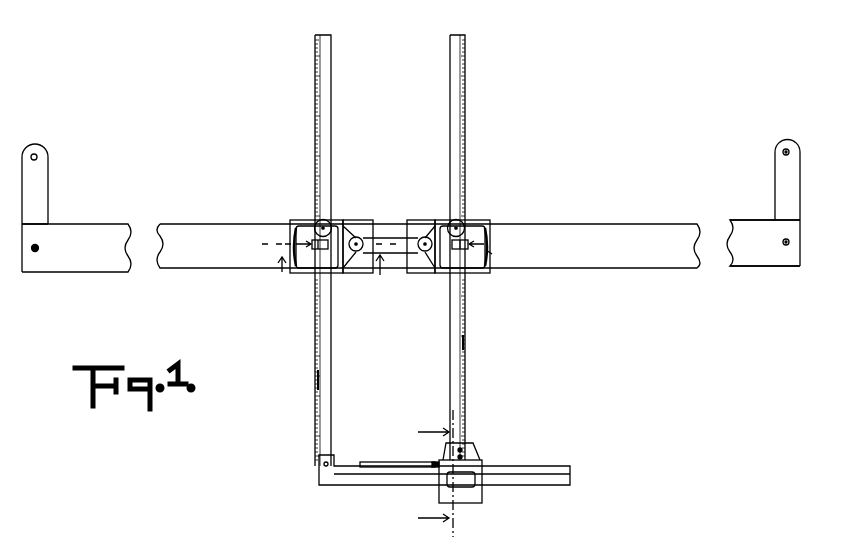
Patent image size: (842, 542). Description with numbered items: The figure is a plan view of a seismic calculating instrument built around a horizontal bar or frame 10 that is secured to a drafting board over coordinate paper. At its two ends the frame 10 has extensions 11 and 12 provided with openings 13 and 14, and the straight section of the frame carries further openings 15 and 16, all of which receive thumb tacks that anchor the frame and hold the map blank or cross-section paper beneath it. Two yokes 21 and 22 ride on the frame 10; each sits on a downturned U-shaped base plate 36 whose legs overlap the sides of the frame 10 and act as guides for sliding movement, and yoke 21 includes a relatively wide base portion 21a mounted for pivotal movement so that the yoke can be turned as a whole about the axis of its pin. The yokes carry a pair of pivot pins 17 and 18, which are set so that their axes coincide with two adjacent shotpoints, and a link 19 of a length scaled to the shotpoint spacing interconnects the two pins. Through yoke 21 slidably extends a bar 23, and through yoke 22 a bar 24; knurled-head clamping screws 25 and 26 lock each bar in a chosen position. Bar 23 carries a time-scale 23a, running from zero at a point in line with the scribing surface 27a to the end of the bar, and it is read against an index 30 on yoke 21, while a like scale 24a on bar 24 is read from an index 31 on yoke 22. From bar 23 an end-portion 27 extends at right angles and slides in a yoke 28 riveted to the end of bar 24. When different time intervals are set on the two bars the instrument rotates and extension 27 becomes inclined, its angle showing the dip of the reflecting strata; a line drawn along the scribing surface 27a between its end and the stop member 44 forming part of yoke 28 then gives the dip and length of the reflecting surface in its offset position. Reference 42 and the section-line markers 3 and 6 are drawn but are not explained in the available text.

The horizontal bar or frame 10 is at (180, 226).
The extension 11 is at (38, 189).
The extension 12 is at (781, 180).
The opening 13 is at (36, 156).
The opening 14 is at (784, 152).
The opening 15 is at (37, 250).
The opening 16 is at (784, 244).
The pivot pin 17 is at (356, 243).
The pivot pin 18 is at (425, 243).
The link 19 is at (398, 248).
The yoke 21 is at (305, 262).
The base portion 21a is at (348, 262).
The yoke 22 is at (478, 262).
The bar 23 is at (322, 140).
The time-scale 23a is at (317, 378).
The bar 24 is at (458, 84).
The scale 24a is at (465, 343).
The clamping screw 25 is at (320, 226).
The clamping screw 26 is at (458, 226).
The end-portion 27 is at (340, 480).
The scribing surface 27a is at (372, 465).
The yoke 28 is at (478, 498).
The index 30 is at (296, 240).
The index 31 is at (486, 242).
The U-shaped base plate 36 is at (366, 225).
The spring 42 is at (490, 252).
The stop member 44 is at (434, 464).
The section line 3 is at (330, 281).
The section line 6 is at (428, 473).